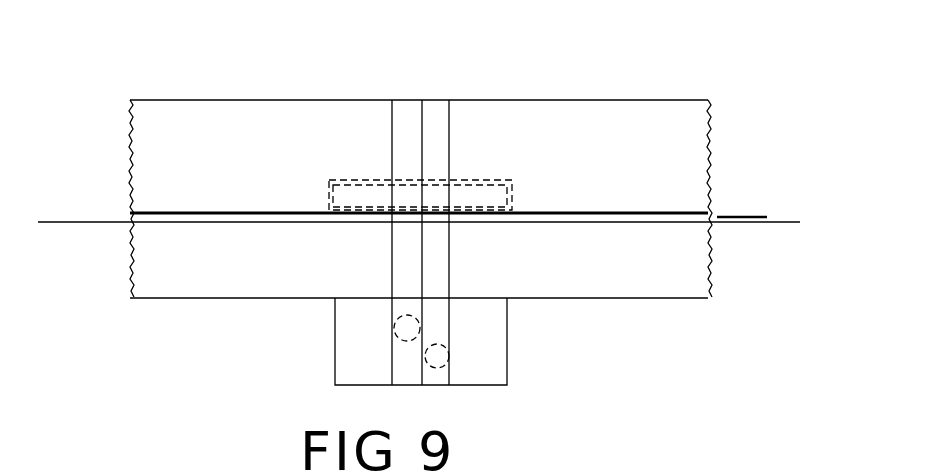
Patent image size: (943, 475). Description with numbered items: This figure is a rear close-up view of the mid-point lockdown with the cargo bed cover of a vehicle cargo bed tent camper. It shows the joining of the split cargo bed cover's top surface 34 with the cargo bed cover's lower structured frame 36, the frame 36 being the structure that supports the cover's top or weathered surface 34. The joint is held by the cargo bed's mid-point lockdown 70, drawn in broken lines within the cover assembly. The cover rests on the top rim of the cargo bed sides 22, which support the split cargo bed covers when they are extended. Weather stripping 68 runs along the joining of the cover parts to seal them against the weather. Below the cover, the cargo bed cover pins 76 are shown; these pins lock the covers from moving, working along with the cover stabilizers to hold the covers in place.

The cargo bed sides 22 is at (107, 218).
The cargo bed cover top surface 34 is at (302, 96).
The lower structured frame 36 is at (158, 303).
The weather stripping 68 is at (408, 96).
The mid-point lockdown 70 is at (483, 175).
The cargo bed cover pin 76 is at (455, 355).